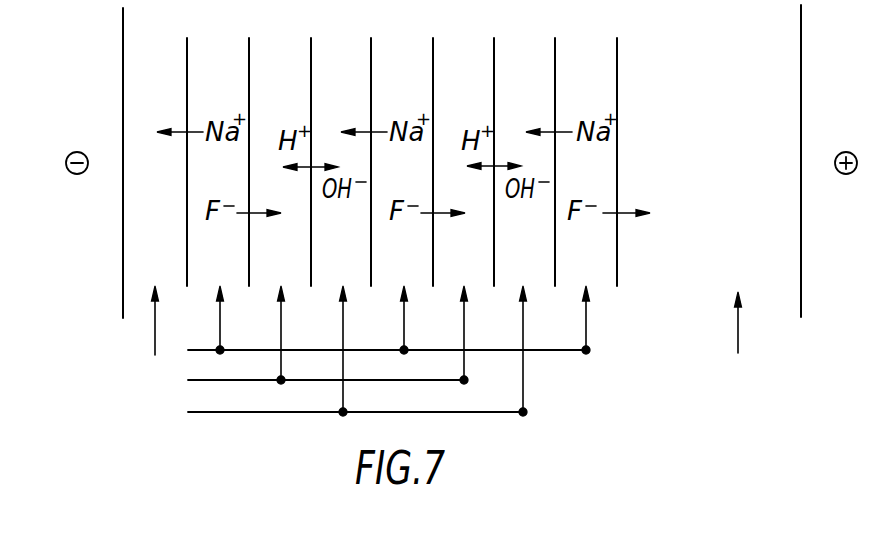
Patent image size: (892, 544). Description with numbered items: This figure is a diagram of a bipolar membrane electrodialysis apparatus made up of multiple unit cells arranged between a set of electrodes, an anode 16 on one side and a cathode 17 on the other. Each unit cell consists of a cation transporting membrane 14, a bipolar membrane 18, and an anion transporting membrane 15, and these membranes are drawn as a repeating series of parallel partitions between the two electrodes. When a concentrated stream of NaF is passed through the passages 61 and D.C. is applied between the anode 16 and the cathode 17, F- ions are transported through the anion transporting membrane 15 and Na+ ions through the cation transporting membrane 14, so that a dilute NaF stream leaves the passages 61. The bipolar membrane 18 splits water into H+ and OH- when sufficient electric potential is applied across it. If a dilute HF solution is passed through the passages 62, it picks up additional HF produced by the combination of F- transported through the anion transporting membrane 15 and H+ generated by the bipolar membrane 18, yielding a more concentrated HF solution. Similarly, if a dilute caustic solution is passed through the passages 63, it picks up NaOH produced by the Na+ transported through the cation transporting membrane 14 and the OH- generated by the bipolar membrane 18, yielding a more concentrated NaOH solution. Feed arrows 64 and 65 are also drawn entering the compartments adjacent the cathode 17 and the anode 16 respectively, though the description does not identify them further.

The cation transporting membrane 14 is at (186, 50).
The anion transporting membrane 15 is at (248, 50).
The bipolar membrane 18 is at (310, 50).
The anode 16 is at (803, 118).
The cathode 17 is at (121, 93).
The passages 61 is at (386, 320).
The passages 62 is at (325, 335).
The passages 63 is at (355, 351).
The catholyte feed 64 is at (149, 335).
The anolyte feed 65 is at (737, 340).